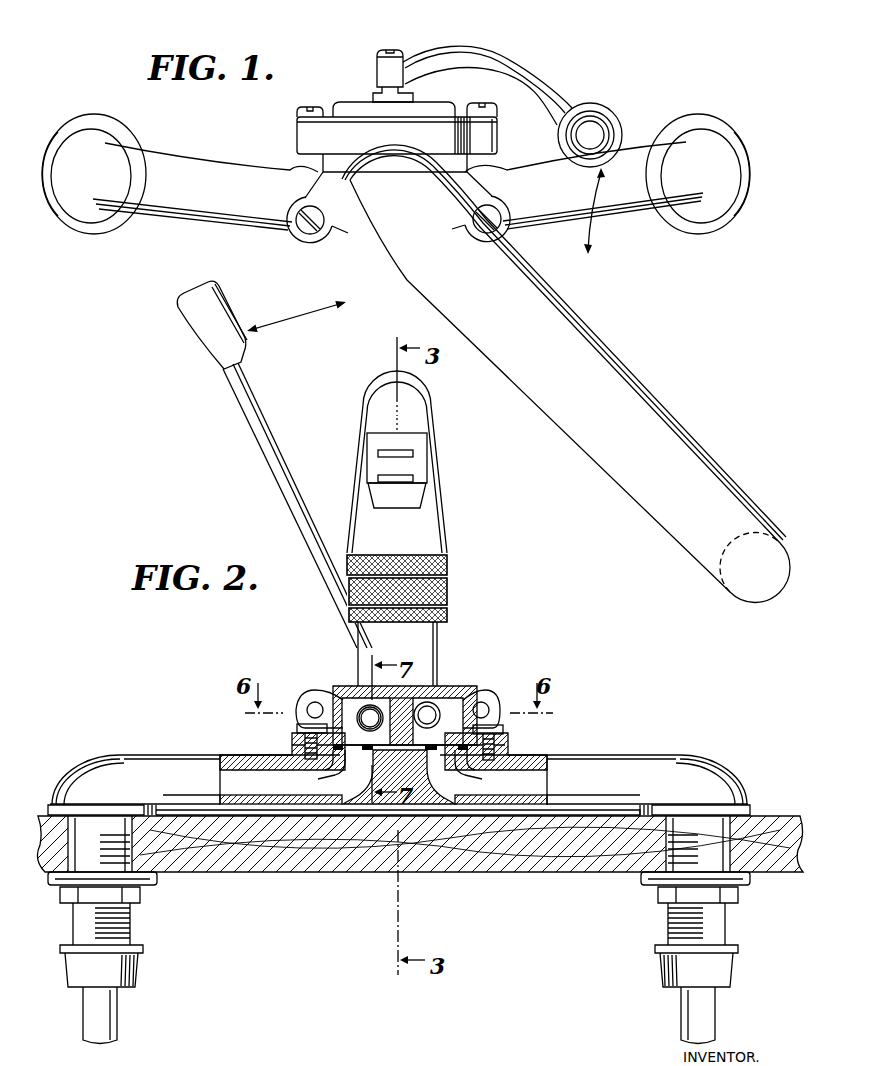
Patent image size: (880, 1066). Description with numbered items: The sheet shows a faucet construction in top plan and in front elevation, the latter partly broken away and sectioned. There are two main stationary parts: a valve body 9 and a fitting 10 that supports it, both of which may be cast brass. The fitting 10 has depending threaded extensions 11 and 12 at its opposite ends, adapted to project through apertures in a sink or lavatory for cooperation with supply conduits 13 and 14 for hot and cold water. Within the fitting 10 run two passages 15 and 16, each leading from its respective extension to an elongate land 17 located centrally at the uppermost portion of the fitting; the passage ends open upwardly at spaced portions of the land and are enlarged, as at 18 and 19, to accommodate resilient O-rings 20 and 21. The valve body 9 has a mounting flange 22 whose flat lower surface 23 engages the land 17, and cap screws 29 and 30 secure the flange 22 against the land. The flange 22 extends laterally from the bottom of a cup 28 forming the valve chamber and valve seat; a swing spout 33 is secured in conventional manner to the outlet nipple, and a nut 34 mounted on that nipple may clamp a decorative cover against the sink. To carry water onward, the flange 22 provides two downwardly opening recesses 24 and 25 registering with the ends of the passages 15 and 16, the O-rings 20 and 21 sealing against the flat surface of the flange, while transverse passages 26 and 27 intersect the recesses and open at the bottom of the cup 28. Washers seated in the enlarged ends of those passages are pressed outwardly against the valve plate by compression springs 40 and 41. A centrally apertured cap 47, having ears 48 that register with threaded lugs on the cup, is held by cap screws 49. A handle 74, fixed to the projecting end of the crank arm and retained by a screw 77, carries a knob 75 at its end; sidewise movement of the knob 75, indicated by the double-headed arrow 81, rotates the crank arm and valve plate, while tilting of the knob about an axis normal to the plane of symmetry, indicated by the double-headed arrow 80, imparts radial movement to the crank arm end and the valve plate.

In FIG. 2, the valve body 9 is at (408, 644).
In FIG. 2, the fitting 10 is at (399, 772).
In FIG. 2, the depending threaded extension 11 is at (127, 920).
In FIG. 2, the depending threaded extension 12 is at (668, 920).
In FIG. 2, the supply conduit 13 is at (103, 1013).
In FIG. 2, the supply conduit 14 is at (690, 1003).
In FIG. 2, the passage 15 is at (233, 770).
In FIG. 2, the passage 16 is at (540, 773).
In FIG. 2, the elongate land 17 is at (292, 750).
In FIG. 2, the enlarged passage end 18 is at (362, 767).
In FIG. 2, the enlarged passage end 19 is at (437, 762).
In FIG. 2, the O-ring 20 is at (338, 760).
In FIG. 2, the O-ring 21 is at (460, 768).
In FIG. 1, the mounting flange 22 is at (332, 237).
In FIG. 2, the mounting flange 22 is at (297, 732).
In FIG. 2, the flat surface 23 is at (503, 741).
In FIG. 2, the downwardly opening recess 24 is at (318, 700).
In FIG. 2, the downwardly opening recess 25 is at (483, 693).
In FIG. 2, the transverse passage 26 is at (356, 686).
In FIG. 2, the transverse passage 27 is at (443, 686).
In FIG. 1, the cup 28 is at (333, 137).
In FIG. 2, the cup 28 is at (447, 686).
In FIG. 1, the cap screw 29 is at (298, 228).
In FIG. 2, the cap screw 29 is at (306, 711).
In FIG. 1, the cap screw 30 is at (500, 223).
In FIG. 2, the cap screw 30 is at (487, 702).
In FIG. 1, the swing spout 33 is at (667, 457).
In FIG. 2, the swing spout 33 is at (438, 460).
In FIG. 2, the nut 34 is at (347, 613).
In FIG. 2, the compression spring 40 is at (362, 706).
In FIG. 2, the compression spring 41 is at (409, 685).
In FIG. 1, the cap 47 is at (432, 108).
In FIG. 1, the ear 48 is at (497, 122).
In FIG. 1, the cap screw 49 is at (318, 106).
In FIG. 1, the handle 74 is at (533, 73).
In FIG. 2, the handle 74 is at (262, 447).
In FIG. 1, the knob 75 is at (606, 116).
In FIG. 2, the knob 75 is at (197, 325).
In FIG. 1, the retainer screw 77 is at (395, 50).
In FIG. 1, the double-headed arrow 80 is at (603, 221).
In FIG. 2, the double-headed arrow 81 is at (293, 318).